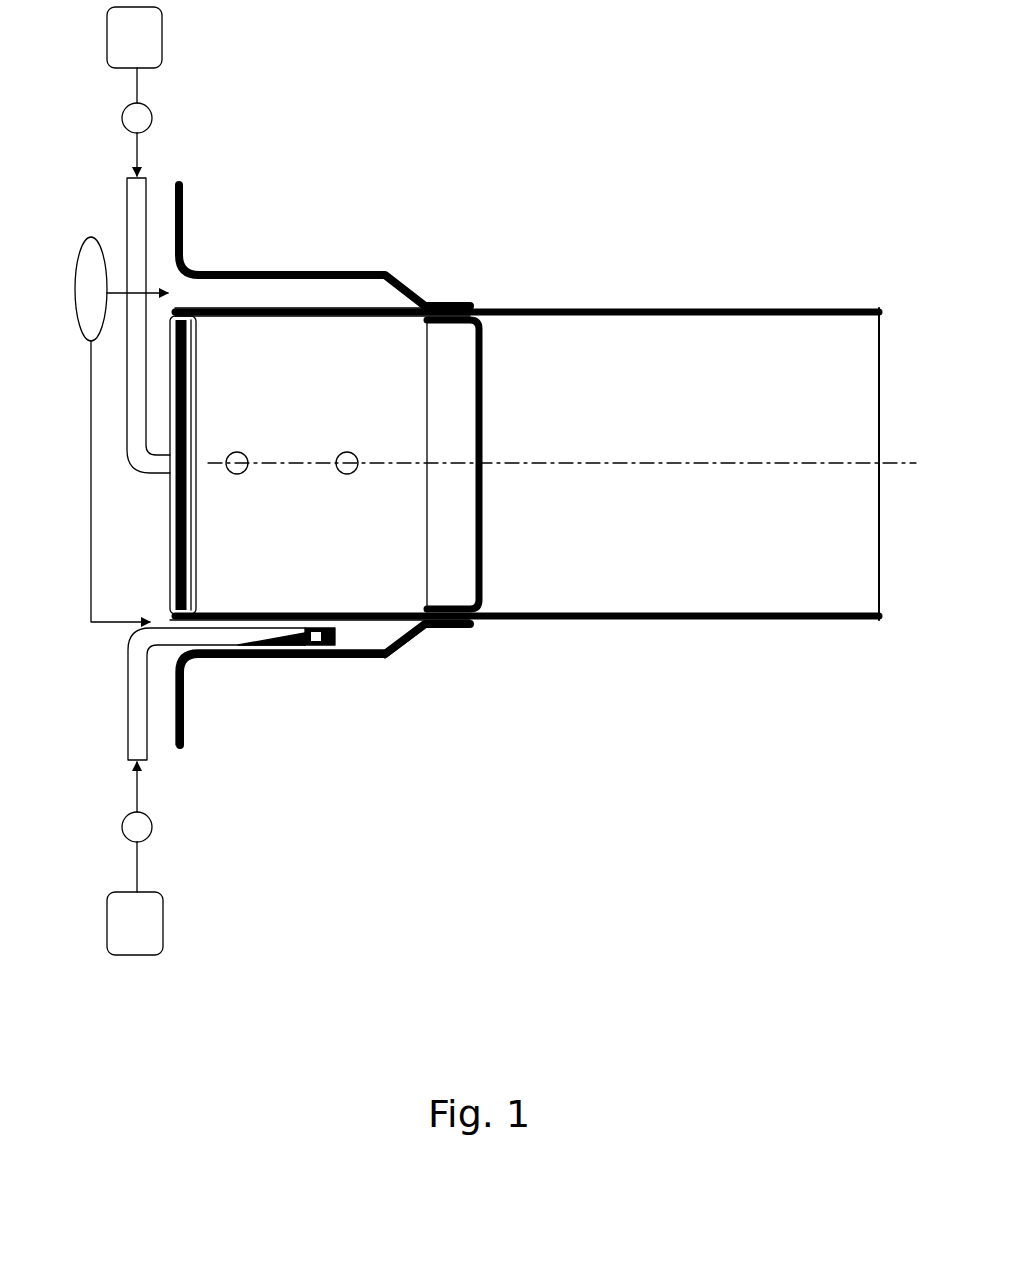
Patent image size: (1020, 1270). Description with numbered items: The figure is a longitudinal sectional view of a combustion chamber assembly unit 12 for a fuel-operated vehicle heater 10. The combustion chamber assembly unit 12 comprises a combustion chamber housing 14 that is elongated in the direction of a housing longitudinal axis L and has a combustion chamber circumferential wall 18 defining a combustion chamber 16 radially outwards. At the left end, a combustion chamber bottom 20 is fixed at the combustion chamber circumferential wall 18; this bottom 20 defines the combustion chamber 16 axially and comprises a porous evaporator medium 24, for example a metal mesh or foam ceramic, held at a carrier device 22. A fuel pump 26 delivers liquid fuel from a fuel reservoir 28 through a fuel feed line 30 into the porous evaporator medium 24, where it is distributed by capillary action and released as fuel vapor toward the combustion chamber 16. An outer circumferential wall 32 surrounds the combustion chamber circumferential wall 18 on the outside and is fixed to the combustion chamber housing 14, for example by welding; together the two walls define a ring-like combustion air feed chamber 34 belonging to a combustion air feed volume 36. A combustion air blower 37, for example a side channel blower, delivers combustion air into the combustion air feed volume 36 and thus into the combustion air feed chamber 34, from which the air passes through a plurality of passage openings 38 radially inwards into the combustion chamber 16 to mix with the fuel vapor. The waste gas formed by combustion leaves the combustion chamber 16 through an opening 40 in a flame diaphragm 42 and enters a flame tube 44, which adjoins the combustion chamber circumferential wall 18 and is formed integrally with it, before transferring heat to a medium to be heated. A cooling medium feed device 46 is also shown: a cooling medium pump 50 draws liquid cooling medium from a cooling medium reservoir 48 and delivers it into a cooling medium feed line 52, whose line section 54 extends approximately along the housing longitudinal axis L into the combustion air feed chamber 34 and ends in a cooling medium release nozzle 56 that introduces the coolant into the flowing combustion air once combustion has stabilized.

The fuel-operated vehicle heater 10 is at (672, 113).
The combustion chamber assembly unit 12 is at (449, 217).
The combustion chamber housing 14 is at (323, 311).
The combustion chamber 16 is at (462, 625).
The combustion chamber circumferential wall 18 is at (272, 312).
The combustion chamber bottom 20 is at (168, 567).
The carrier device 22 is at (170, 497).
The porous evaporator medium 24 is at (170, 480).
The fuel pump 26 is at (152, 115).
The fuel reservoir 28 is at (162, 35).
The fuel feed line 30 is at (127, 200).
The outer circumferential wall 32 is at (278, 657).
The combustion air feed chamber 34 is at (372, 640).
The combustion air feed volume 36 is at (162, 310).
The combustion air blower 37 is at (77, 300).
The passage openings 38 is at (237, 311).
The opening 40 is at (485, 415).
The flame diaphragm 42 is at (483, 342).
The flame tube 44 is at (695, 308).
The cooling medium feed device 46 is at (195, 883).
The cooling medium reservoir 48 is at (138, 958).
The cooling medium pump 50 is at (152, 827).
The cooling medium feed line 52 is at (128, 730).
The line section 54 is at (215, 657).
The cooling medium release nozzle 56 is at (325, 648).
The housing longitudinal axis L is at (895, 465).